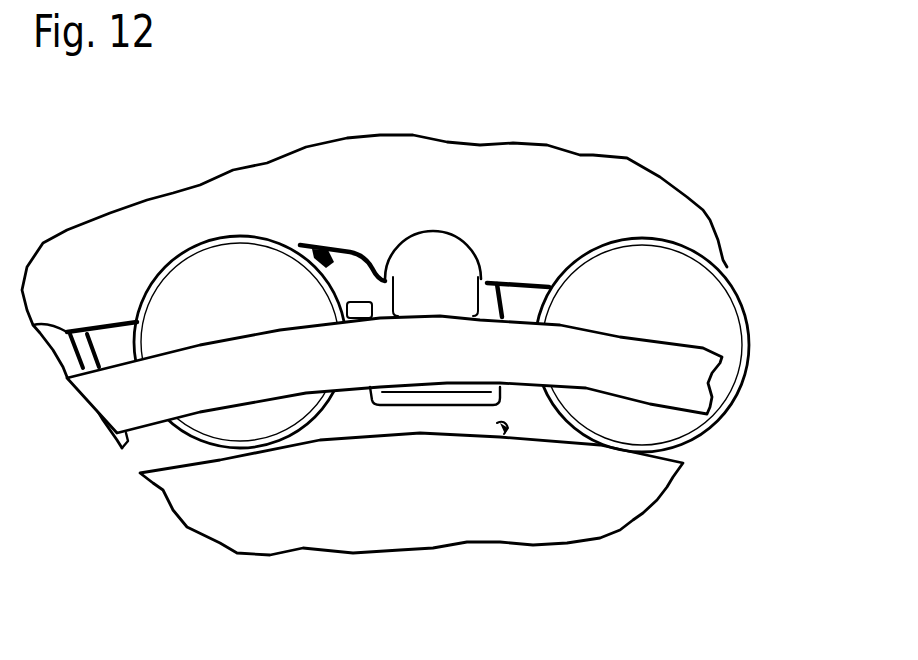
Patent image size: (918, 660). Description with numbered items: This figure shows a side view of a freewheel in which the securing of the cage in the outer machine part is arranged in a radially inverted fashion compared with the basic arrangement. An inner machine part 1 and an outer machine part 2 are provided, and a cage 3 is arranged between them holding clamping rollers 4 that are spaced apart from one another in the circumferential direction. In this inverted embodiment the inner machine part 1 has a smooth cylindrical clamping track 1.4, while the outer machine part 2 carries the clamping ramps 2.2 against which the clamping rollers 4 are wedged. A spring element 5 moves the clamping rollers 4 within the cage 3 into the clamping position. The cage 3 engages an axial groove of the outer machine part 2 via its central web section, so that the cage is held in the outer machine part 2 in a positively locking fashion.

The inner machine part 1 is at (612, 513).
The smooth cylindrical clamping track 1.4 is at (497, 423).
The outer machine part 2 is at (630, 185).
The clamping ramps 2.2 is at (333, 247).
The cage 3 is at (680, 393).
The clamping rollers 4 is at (200, 280).
The spring element 5 is at (362, 310).